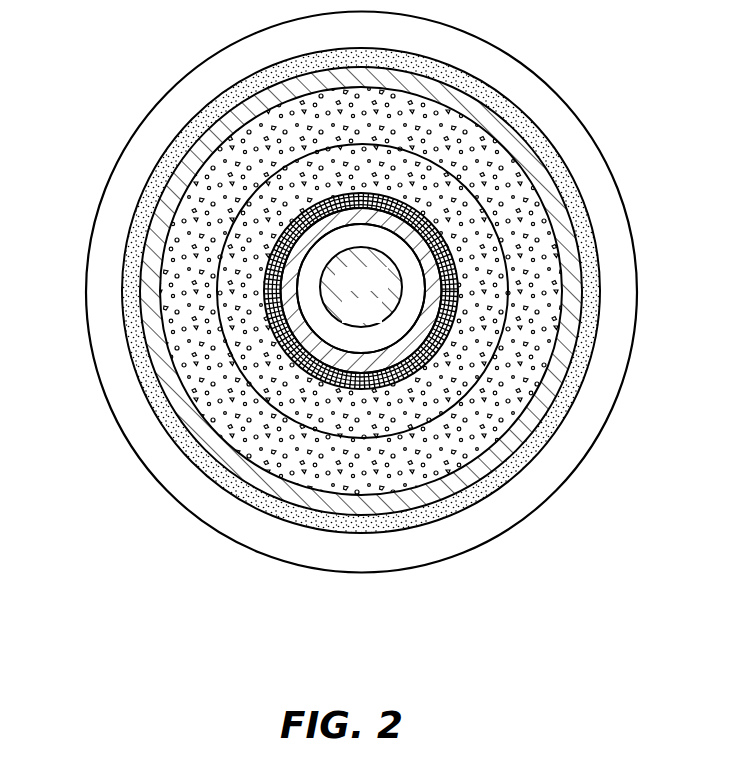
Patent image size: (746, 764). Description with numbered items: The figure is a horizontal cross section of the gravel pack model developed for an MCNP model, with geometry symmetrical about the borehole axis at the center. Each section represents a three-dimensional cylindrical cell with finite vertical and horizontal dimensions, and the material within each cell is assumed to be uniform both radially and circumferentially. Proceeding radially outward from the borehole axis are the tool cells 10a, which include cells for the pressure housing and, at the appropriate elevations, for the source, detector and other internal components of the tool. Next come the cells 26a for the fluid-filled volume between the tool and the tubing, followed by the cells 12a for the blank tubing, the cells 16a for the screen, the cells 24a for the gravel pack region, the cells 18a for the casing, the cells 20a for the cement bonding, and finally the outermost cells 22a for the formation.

The tool cells 10a is at (383, 295).
The cells for the blank tubing 12a is at (322, 355).
The cells for the screen 16a is at (413, 375).
The cells for the casing 18a is at (562, 237).
The cells for the cement bonding 20a is at (557, 160).
The cells for the formation 22a is at (513, 80).
The cells for the gravel pack region 24a is at (505, 393).
The cells for the volume between the tool and the tubing 26a is at (361, 291).